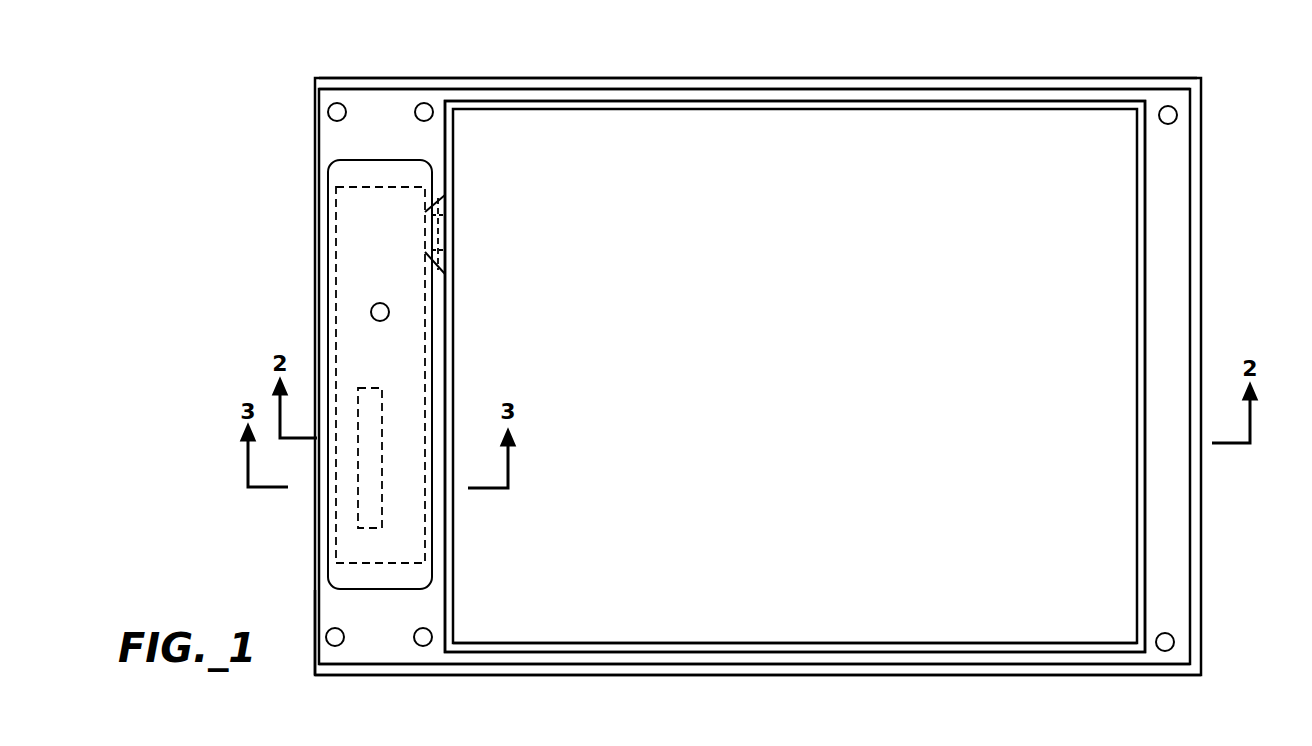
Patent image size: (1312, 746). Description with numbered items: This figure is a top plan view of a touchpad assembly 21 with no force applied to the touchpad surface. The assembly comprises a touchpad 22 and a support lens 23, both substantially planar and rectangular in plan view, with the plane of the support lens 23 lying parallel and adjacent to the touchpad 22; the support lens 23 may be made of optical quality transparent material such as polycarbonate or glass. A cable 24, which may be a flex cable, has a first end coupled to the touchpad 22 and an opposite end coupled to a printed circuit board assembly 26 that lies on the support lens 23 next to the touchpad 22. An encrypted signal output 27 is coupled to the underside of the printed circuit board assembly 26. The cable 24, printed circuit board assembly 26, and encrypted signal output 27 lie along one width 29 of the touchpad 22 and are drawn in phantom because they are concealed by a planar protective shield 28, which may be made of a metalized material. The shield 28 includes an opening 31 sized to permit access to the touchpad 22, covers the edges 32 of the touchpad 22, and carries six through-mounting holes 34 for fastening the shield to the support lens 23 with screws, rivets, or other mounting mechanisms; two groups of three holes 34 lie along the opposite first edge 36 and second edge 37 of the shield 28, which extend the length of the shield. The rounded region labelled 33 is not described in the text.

The touchpad assembly 21 is at (1236, 84).
The touchpad 22 is at (897, 124).
The support lens 23 is at (994, 689).
The cable 24 is at (460, 225).
The printed circuit board assembly 26 is at (321, 250).
The encrypted signal output 27 is at (341, 481).
The protective shield 28 is at (326, 604).
The width 29 is at (395, 65).
The opening 31 is at (872, 636).
The edges 32 is at (808, 99).
The housing 33 is at (329, 145).
The mounting hole 34 is at (337, 101).
The first edge 36 is at (542, 78).
The second edge 37 is at (540, 665).